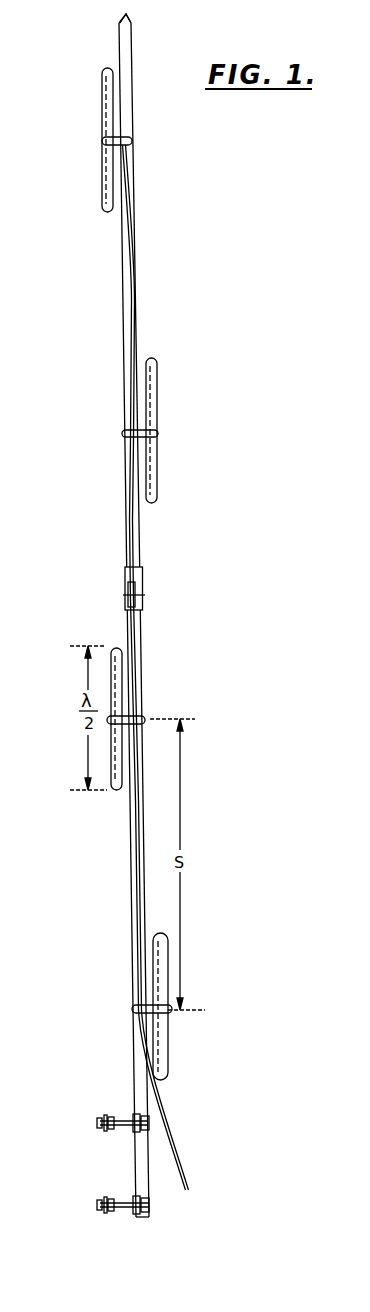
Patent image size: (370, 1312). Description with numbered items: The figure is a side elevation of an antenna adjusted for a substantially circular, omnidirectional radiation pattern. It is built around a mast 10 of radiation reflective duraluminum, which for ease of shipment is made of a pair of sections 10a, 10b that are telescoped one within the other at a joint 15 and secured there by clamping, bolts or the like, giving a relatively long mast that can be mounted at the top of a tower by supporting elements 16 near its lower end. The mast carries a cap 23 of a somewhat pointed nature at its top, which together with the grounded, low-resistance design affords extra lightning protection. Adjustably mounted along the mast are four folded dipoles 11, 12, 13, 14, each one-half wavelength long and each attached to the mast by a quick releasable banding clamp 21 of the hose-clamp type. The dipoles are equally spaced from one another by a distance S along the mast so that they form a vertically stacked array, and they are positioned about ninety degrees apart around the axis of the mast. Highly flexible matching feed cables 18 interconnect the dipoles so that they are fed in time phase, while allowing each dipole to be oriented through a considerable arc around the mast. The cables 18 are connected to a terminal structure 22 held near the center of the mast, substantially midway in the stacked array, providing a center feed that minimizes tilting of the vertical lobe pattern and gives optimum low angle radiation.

The mast 10 is at (140, 615).
The mast section 10a is at (138, 640).
The mast section 10b is at (130, 482).
The folded dipole 11 is at (170, 1058).
The folded dipole 12 is at (113, 790).
The folded dipole 13 is at (157, 479).
The folded dipole 14 is at (103, 186).
The telescoped joint 15 is at (143, 570).
The supporting elements 16 is at (112, 1118).
The matching feed cable 18 is at (133, 295).
The banding clamp 21 is at (132, 142).
The terminal structure 22 is at (128, 592).
The cap 23 is at (128, 17).